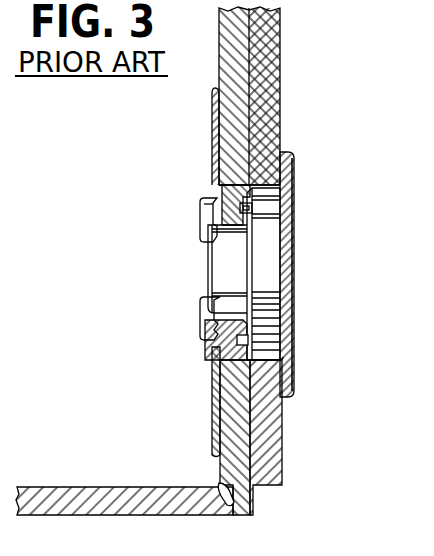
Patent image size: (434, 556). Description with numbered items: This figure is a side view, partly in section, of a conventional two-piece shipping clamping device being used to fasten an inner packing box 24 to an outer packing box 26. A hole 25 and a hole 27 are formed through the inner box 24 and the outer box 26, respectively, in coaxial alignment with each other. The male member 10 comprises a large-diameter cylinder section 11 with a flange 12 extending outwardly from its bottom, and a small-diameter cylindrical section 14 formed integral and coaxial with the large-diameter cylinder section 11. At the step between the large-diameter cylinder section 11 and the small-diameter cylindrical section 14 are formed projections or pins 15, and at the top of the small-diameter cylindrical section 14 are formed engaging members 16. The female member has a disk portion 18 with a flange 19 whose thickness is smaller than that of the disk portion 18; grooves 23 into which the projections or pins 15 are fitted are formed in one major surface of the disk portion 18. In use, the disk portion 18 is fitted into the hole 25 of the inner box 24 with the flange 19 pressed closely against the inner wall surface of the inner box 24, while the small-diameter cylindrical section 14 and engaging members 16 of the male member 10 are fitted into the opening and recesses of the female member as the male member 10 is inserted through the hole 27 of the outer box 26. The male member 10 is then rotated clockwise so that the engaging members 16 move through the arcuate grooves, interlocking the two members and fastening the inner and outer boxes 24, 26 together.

The male member 10 is at (296, 268).
The large-diameter cylinder section 11 is at (262, 237).
The flange 12 is at (283, 324).
The small-diameter cylindrical section 14 is at (233, 263).
The projections or pins 15 is at (252, 208).
The engaging members 16 is at (207, 322).
The disk portion 18 is at (219, 190).
The flange 19 is at (212, 415).
The grooves 23 is at (240, 210).
The inner packing box 24 is at (240, 465).
The hole 25 is at (215, 362).
The outer packing box 26 is at (268, 432).
The hole 27 is at (262, 175).